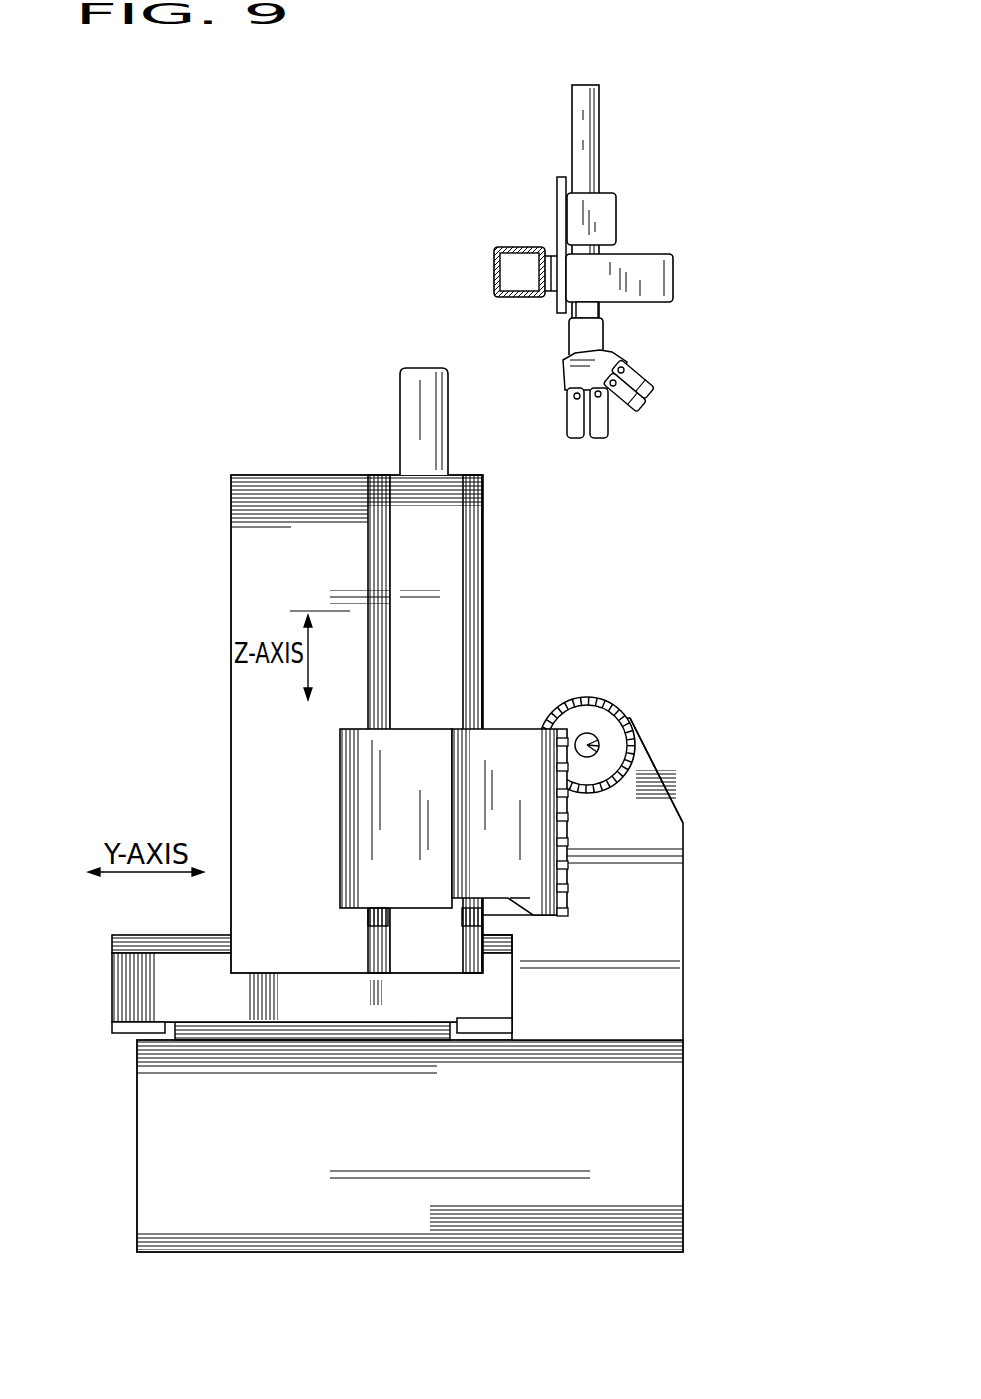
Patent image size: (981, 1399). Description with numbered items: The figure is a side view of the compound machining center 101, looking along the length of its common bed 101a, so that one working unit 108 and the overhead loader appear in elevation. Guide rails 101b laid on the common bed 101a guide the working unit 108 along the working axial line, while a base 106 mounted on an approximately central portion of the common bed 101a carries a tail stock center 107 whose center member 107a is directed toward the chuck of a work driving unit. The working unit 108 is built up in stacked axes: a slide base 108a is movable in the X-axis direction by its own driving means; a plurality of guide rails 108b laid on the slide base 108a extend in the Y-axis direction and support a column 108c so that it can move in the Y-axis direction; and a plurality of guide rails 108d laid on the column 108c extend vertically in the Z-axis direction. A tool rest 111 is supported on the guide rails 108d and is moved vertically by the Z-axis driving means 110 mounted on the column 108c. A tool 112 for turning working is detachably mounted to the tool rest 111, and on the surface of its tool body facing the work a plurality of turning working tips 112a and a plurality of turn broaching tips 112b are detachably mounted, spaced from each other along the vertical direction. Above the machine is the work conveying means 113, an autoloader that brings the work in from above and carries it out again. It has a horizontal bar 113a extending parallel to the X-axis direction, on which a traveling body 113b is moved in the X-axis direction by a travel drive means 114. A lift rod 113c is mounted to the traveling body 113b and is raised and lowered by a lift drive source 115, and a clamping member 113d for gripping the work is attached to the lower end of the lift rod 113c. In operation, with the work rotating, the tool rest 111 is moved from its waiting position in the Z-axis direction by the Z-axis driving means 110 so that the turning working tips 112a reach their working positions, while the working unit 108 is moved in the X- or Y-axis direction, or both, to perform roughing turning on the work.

The compound machining center 101 is at (128, 1122).
The common bed 101a is at (655, 1222).
The guide rails 101b is at (193, 1023).
The base 106 is at (640, 1010).
The tail stock center 107 is at (670, 797).
The center member 107a is at (613, 719).
The working unit 108 is at (348, 691).
The slide base 108a is at (137, 992).
The guide rails 108b is at (118, 938).
The column 108c is at (282, 480).
The guide rails 108d is at (376, 510).
The Z-axis driving means 110 is at (410, 378).
The tool rest 111 is at (357, 782).
The tool 112 is at (559, 780).
The turning working tips 112a is at (570, 912).
The turn broaching tips 112b is at (598, 765).
The work conveying means 113 is at (579, 261).
The horizontal bar 113a is at (495, 250).
The traveling body 113b is at (560, 198).
The lift rod 113c is at (597, 131).
The clamping member 113d is at (645, 373).
The travel drive means 114 is at (652, 283).
The lift drive source 115 is at (615, 207).